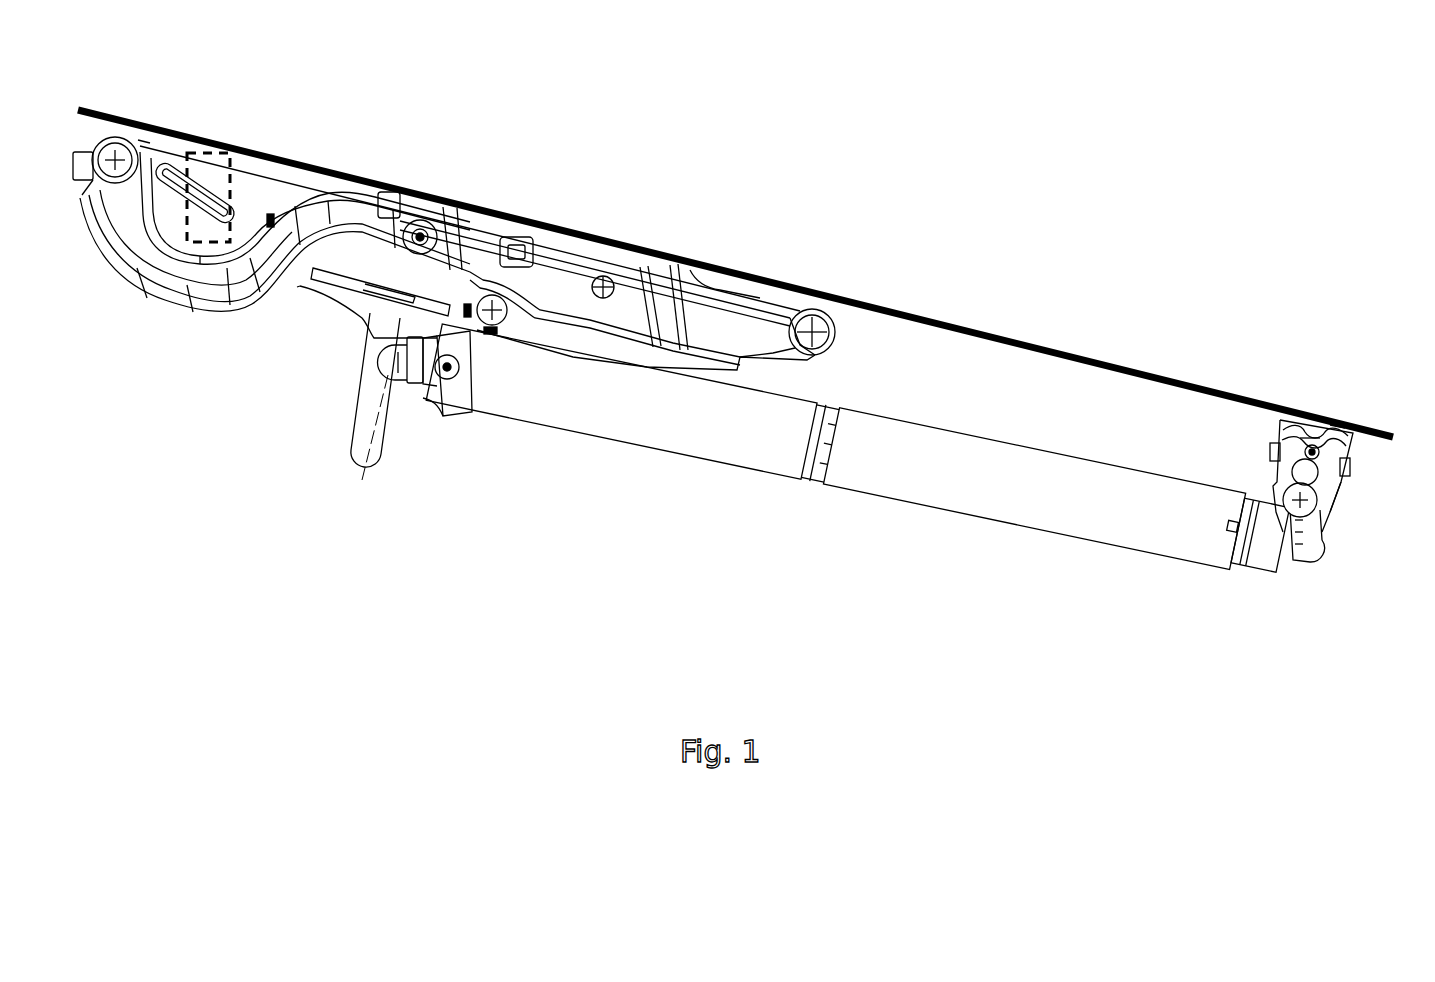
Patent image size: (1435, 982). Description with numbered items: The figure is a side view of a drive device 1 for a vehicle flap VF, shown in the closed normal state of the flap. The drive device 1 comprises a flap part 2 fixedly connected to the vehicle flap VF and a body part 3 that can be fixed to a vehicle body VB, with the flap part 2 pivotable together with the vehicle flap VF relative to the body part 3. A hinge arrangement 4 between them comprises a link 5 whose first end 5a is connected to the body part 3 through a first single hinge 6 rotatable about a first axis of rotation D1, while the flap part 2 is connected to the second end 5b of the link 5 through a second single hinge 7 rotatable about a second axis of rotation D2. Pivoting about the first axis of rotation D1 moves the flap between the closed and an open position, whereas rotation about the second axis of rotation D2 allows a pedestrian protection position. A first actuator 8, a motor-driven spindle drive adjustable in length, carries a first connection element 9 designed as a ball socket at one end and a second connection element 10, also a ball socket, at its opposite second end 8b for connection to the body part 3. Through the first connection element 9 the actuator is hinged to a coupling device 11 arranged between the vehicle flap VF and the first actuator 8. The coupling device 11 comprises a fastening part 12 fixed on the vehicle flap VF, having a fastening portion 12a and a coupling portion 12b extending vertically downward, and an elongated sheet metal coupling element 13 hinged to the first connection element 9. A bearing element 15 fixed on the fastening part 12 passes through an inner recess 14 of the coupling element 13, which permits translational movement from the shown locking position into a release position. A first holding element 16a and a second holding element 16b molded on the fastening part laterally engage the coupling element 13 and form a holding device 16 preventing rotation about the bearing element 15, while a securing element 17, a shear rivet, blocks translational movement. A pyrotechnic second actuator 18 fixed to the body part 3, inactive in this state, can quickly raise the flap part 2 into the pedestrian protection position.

The drive device 1 is at (575, 505).
The flap part 2 is at (565, 247).
The body part 3 is at (260, 203).
The hinge arrangement 4 is at (310, 305).
The link 5 is at (255, 275).
The first end 5a is at (127, 208).
The second end 5b is at (775, 330).
The first single hinge 6 is at (112, 173).
The second single hinge 7 is at (830, 310).
The first actuator 8 is at (752, 452).
The second end 8b is at (473, 390).
The first connection element 9 is at (1247, 560).
The second connection element 10 is at (440, 393).
The coupling device 11 is at (1240, 427).
The fastening part 12 is at (1312, 447).
The fastening portion 12a is at (1293, 425).
The coupling portion 12b is at (1313, 430).
The coupling element 13 is at (1327, 483).
The inner recess 14 is at (1297, 470).
The bearing element 15 is at (1307, 510).
The holding device 16 is at (1358, 456).
The first holding element 16a is at (1272, 448).
The second holding element 16b is at (1347, 470).
The securing element 17 is at (1340, 423).
The second actuator 18 is at (363, 418).
The first axis of rotation D1 is at (115, 160).
The second axis of rotation D2 is at (812, 332).
The vehicle body VB is at (203, 155).
The vehicle flap VF is at (943, 323).